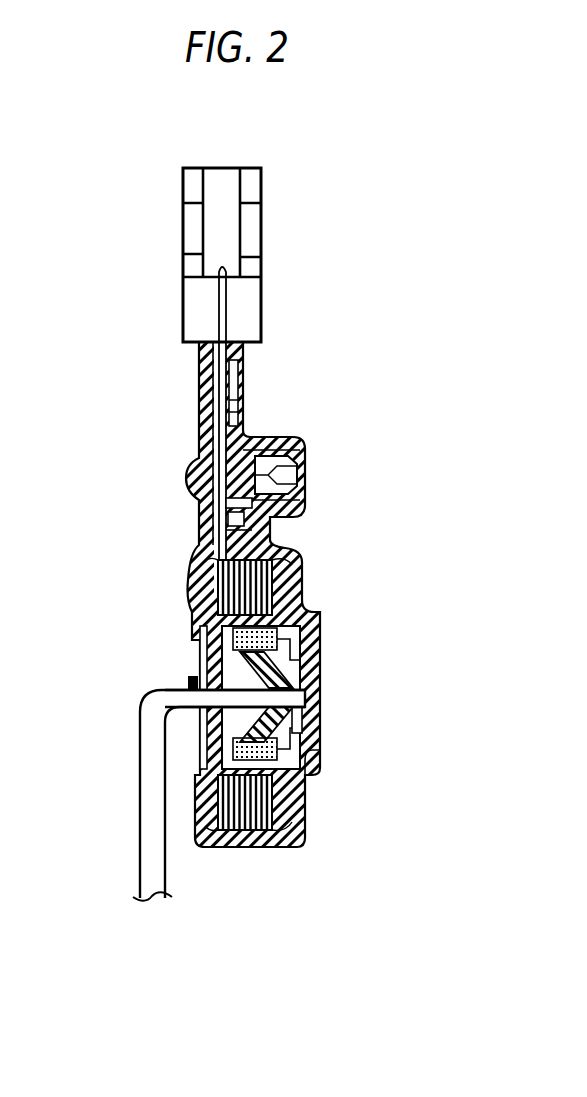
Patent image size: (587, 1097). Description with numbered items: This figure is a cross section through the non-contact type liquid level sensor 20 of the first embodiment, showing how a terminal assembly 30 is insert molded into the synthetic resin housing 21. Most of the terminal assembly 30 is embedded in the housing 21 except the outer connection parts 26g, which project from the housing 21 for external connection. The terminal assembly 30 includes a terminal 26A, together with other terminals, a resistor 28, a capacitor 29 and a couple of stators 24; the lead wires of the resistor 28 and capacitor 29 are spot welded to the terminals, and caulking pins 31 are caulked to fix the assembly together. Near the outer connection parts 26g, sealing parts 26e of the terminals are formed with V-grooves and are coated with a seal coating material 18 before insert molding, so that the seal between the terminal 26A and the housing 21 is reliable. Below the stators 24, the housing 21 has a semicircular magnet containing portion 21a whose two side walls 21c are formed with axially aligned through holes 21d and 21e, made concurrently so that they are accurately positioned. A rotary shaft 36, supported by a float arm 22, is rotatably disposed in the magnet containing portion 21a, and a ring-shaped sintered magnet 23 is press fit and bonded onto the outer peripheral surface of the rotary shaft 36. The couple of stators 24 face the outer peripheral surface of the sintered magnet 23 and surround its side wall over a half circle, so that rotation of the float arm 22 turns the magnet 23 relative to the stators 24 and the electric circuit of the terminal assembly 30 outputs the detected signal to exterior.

The non-contact type liquid level sensor 20 is at (424, 286).
The seal coating material 18 is at (248, 358).
The housing 21 is at (192, 358).
The magnet containing portion 21a is at (288, 633).
The side walls 21c is at (322, 648).
The through hole 21d is at (147, 700).
The through hole 21e is at (305, 729).
The float arm 22 is at (137, 858).
The sintered magnet 23 is at (190, 683).
The stators 24 is at (264, 556).
The terminal 26A is at (247, 383).
The sealing parts 26e is at (247, 418).
The outer connection parts 26g is at (216, 320).
The resistor 28 is at (256, 519).
The capacitor 29 is at (292, 467).
The terminal assembly 30 is at (203, 428).
The caulking pins 31 is at (195, 592).
The rotary shaft 36 is at (322, 742).